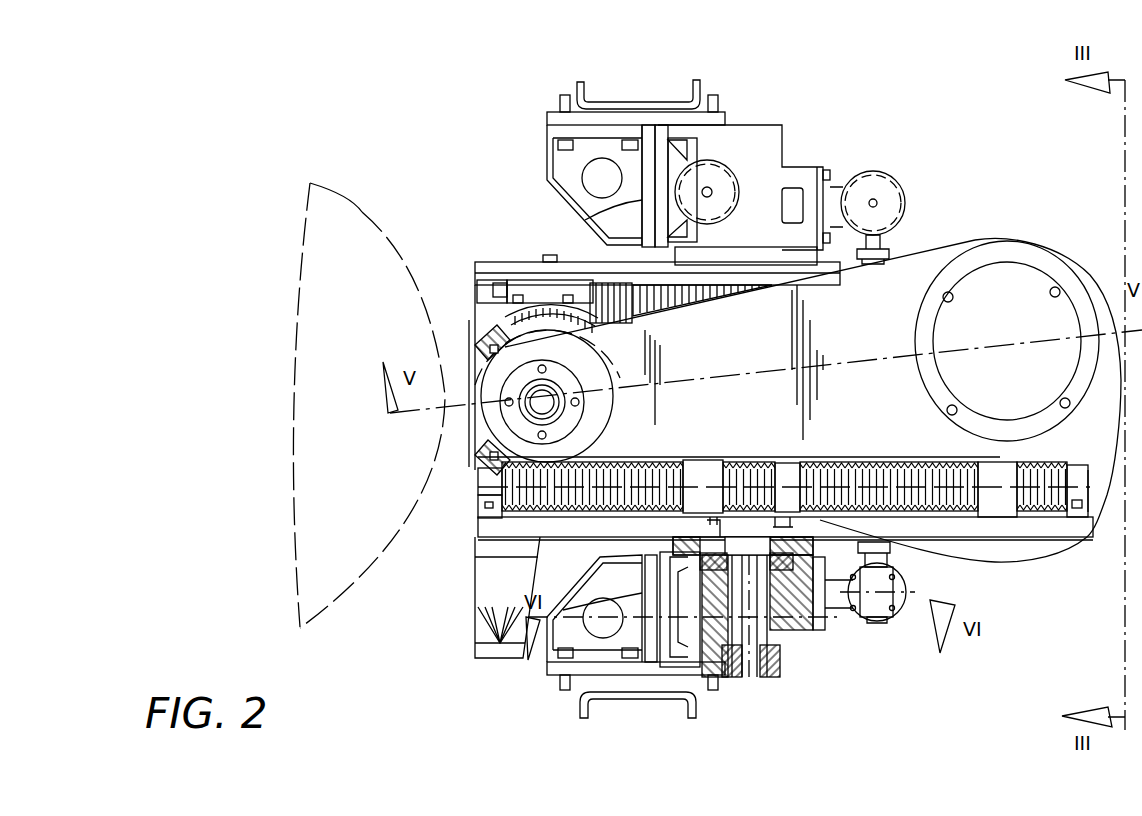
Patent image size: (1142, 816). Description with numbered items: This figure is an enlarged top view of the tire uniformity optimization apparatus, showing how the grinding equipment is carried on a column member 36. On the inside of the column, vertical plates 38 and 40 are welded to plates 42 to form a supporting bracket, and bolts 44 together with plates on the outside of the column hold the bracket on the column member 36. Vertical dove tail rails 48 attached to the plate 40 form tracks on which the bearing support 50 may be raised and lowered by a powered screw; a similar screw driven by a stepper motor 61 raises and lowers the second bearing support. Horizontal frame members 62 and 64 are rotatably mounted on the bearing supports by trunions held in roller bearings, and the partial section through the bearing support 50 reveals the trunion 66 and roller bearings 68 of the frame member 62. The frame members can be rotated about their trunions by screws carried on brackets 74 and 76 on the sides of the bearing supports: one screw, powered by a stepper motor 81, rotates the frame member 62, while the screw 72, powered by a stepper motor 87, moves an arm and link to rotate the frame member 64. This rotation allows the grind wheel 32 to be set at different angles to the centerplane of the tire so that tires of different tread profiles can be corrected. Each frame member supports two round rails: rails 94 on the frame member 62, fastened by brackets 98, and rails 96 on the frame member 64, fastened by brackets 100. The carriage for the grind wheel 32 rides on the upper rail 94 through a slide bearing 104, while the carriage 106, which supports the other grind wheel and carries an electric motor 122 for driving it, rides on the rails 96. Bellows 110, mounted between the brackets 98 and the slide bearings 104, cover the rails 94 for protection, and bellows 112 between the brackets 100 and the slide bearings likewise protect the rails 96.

The grind wheel 32 is at (452, 405).
The column member 36 is at (700, 88).
The vertical plate 38 is at (545, 665).
The vertical plate 40 is at (600, 200).
The plate 42 is at (548, 118).
The bolt 44 is at (564, 103).
The vertical dove tail rail 48 is at (685, 155).
The bearing support 50 is at (800, 630).
The stepper motor 61 is at (722, 168).
The horizontal frame member 62 is at (1015, 538).
The horizontal frame member 64 is at (487, 262).
The trunion 66 is at (770, 662).
The roller bearing 68 is at (805, 536).
The screw 72 is at (878, 205).
The bracket 74 is at (848, 610).
The bracket 76 is at (840, 185).
The stepper motor 81 is at (906, 595).
The stepper motor 87 is at (905, 205).
The round rail 94 is at (478, 488).
The round rail 96 is at (648, 310).
The bracket 98 is at (482, 505).
The bracket 100 is at (600, 278).
The slide bearing 104 is at (710, 468).
The carriage 106 is at (968, 248).
The bellows 110 is at (520, 505).
The bellows 112 is at (735, 305).
The electric motor 122 is at (1025, 283).